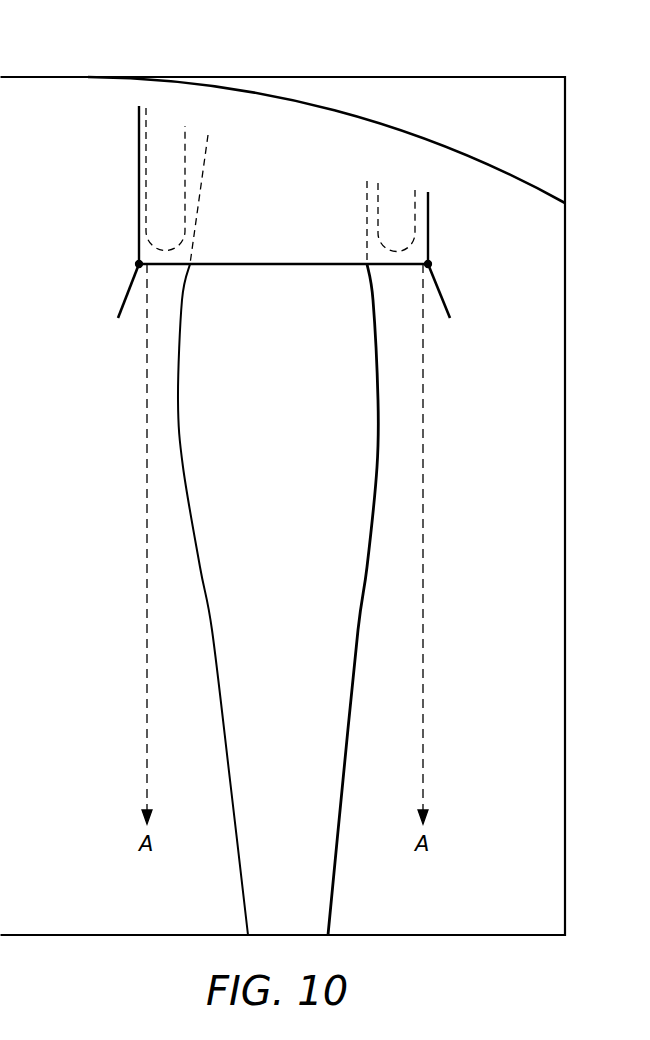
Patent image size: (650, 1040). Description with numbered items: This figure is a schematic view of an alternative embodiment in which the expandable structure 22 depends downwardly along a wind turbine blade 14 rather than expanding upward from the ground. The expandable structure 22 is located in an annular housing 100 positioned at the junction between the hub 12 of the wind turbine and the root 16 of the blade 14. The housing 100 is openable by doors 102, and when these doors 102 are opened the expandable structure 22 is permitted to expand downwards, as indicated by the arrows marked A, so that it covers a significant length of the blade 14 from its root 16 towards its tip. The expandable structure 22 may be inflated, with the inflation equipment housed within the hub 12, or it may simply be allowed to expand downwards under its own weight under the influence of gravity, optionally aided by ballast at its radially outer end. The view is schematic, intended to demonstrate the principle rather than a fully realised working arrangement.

The hub 12 is at (457, 90).
The root 16 is at (253, 173).
The annular housing 100 is at (304, 230).
The expandable structure 22 is at (148, 184).
The doors 102 is at (121, 297).
The blade 14 is at (324, 882).